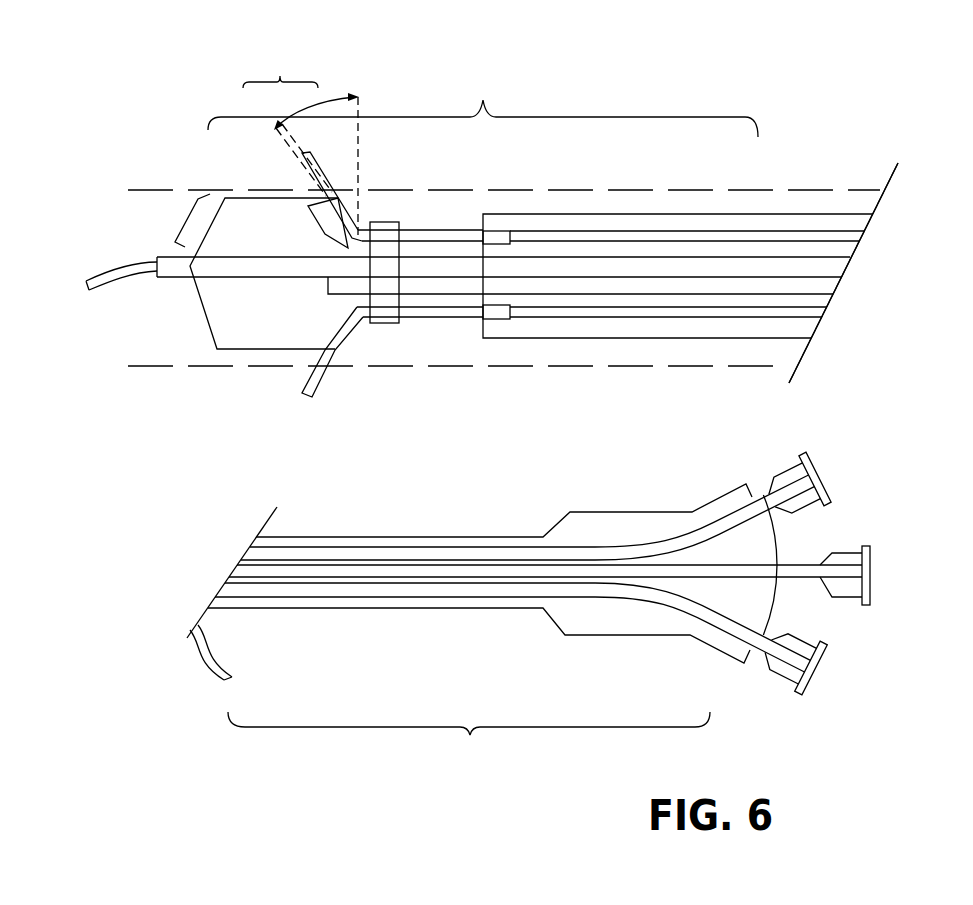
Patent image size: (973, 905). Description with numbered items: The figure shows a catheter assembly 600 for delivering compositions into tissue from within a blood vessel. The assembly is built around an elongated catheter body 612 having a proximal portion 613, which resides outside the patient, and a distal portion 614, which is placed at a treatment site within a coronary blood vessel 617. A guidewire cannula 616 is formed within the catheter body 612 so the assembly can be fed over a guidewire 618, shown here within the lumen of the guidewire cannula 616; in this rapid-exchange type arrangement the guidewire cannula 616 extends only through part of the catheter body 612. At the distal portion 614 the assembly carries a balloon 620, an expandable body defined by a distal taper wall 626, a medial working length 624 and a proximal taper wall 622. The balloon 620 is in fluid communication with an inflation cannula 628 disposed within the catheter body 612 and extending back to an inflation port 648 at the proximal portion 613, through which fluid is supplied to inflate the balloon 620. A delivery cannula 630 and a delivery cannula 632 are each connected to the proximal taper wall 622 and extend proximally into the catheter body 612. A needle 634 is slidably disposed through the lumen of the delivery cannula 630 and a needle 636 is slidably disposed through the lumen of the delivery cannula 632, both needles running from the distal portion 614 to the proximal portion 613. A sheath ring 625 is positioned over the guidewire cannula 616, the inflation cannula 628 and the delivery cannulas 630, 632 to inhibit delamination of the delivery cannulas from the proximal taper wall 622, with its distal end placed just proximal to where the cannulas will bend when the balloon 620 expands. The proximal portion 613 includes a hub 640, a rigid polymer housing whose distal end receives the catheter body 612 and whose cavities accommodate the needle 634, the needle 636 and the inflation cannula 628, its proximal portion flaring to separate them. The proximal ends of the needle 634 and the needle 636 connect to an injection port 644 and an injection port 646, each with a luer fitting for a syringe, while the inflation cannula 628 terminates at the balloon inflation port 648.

The catheter assembly 600 is at (810, 101).
The catheter body 612 is at (688, 214).
The proximal portion 613 is at (448, 636).
The distal portion 614 is at (483, 105).
The guidewire cannula 616 is at (178, 278).
The coronary blood vessel 617 is at (828, 200).
The guidewire 618 is at (103, 281).
The balloon 620 is at (207, 328).
The proximal taper wall 622 is at (323, 228).
The medial working length 624 is at (301, 144).
The sheath ring 625 is at (377, 222).
The distal taper wall 626 is at (187, 222).
The inflation cannula 628 is at (417, 286).
The delivery cannula 630 is at (448, 230).
The delivery cannula 632 is at (465, 320).
The needle 634 is at (315, 167).
The needle 636 is at (317, 390).
The hub 640 is at (593, 512).
The injection port 644 is at (777, 470).
The injection port 646 is at (790, 688).
The inflation port 648 is at (871, 574).